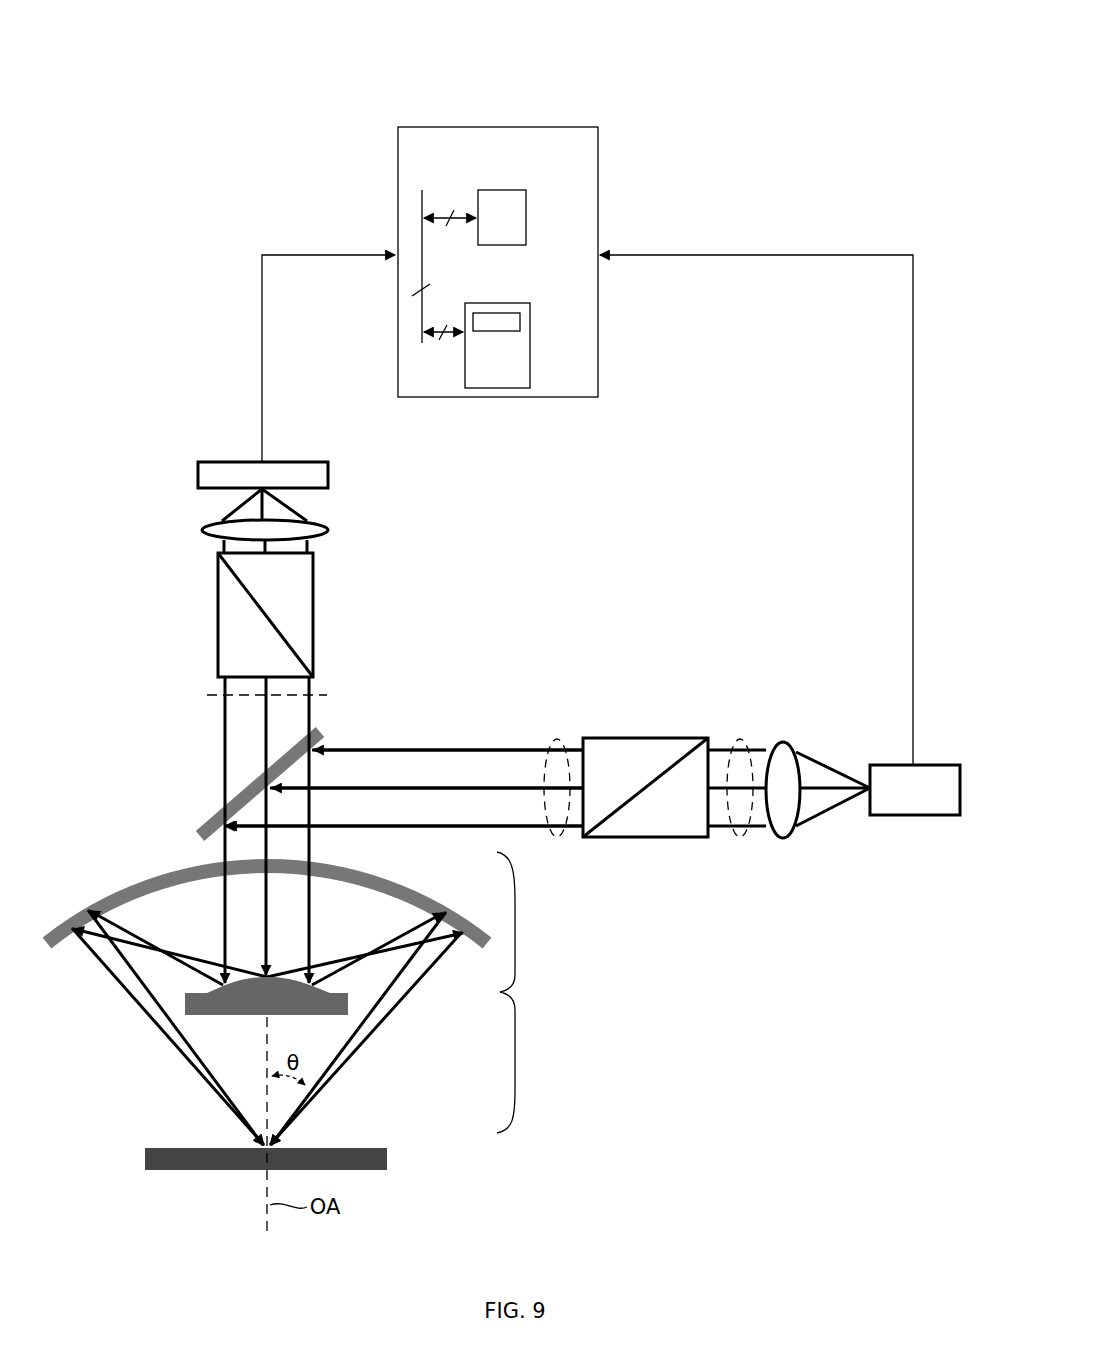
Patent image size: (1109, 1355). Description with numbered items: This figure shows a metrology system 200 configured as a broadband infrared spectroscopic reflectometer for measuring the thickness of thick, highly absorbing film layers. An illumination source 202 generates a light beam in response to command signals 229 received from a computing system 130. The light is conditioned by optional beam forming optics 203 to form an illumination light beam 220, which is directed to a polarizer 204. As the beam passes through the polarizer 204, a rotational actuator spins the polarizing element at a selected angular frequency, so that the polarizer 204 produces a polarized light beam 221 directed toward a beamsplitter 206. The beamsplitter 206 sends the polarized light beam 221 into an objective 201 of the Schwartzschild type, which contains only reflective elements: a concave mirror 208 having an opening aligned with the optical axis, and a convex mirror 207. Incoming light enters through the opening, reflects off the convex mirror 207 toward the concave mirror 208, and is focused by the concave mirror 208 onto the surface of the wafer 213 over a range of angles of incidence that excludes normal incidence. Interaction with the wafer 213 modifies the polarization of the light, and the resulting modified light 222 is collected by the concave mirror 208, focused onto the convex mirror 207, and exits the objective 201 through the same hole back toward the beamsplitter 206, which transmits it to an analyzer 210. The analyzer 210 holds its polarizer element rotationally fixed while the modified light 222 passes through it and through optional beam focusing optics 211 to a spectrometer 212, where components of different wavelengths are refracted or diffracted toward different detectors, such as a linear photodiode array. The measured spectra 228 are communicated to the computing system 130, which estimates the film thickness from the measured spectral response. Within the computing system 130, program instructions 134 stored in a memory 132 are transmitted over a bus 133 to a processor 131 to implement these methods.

The metrology system 200 is at (822, 100).
The computing system 130 is at (480, 154).
The processor 131 is at (526, 216).
The memory 132 is at (465, 380).
The bus 133 is at (423, 262).
The program instructions 134 is at (520, 322).
The measured spectra 228 is at (338, 245).
The illumination control signal line 229 is at (698, 243).
The spectrometer 212 is at (244, 487).
The beam focusing optics 211 is at (205, 530).
The analyzer 210 is at (257, 592).
The modified light 222 is at (210, 695).
The beamsplitter 206 is at (198, 832).
The polarizer 204 is at (607, 772).
The polarized light beam 221 is at (559, 838).
The illumination light beam 220 is at (743, 838).
The beam forming optics 203 is at (795, 836).
The illumination source 202 is at (897, 800).
The concave mirror 208 is at (98, 890).
The convex mirror 207 is at (243, 1017).
The objective 201 is at (503, 992).
The specimen 213 is at (387, 1158).